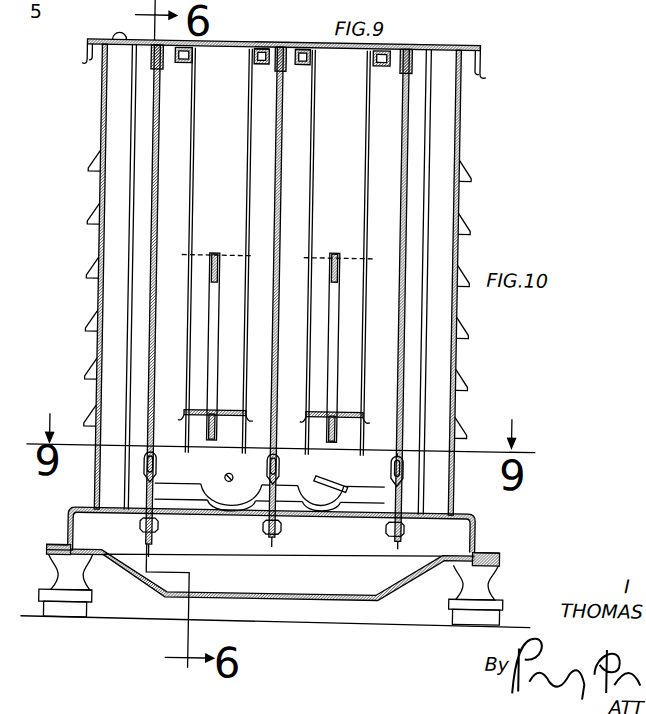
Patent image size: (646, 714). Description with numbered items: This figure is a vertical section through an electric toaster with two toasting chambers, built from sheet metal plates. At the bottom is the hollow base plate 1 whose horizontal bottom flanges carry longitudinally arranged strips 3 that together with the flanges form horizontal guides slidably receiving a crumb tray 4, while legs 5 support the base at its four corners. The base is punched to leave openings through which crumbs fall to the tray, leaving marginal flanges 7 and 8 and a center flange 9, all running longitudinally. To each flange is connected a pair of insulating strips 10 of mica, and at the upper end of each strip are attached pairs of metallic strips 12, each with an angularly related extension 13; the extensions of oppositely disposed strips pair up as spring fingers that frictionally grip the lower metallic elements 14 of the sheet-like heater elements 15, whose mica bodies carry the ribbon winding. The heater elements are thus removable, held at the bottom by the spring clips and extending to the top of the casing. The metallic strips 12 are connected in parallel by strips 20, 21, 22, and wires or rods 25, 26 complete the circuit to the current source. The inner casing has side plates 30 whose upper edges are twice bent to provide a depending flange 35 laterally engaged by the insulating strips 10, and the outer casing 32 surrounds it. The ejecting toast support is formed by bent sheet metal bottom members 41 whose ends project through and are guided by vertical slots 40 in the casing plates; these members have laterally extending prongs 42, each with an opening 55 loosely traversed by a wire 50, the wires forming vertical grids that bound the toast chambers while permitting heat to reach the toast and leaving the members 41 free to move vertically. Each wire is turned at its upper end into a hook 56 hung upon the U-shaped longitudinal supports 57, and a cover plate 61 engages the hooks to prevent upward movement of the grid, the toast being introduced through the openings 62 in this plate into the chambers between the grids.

The base plate 1 is at (460, 515).
The strips 3 is at (61, 558).
The crumb tray 4 is at (341, 602).
The legs 5 is at (67, 601).
The marginal flange 7 is at (145, 533).
The marginal flange 8 is at (283, 541).
The center flange 9 is at (411, 541).
The insulating strips 10 is at (163, 540).
The metallic strips 12 is at (149, 491).
The spring fingers 13 is at (146, 462).
The lower metallic elements 14 is at (404, 456).
The sheet-like heater elements 15 is at (154, 173).
The strip 20 is at (328, 505).
The strip 21 is at (356, 510).
The strip 22 is at (235, 515).
The bar 25 is at (334, 469).
The wire or rod 26 is at (238, 470).
The side plates 30 is at (127, 128).
The outer casing 32 is at (99, 289).
The depending flange 35 is at (150, 61).
The vertical slots 40 is at (213, 254).
The translatable bottom members 41 is at (212, 272).
The arms or prongs 42 is at (206, 419).
The wires 50 is at (244, 137).
The openings 55 is at (188, 410).
The hook 56 is at (296, 46).
The supports 57 is at (185, 66).
The cover plate 61 is at (91, 42).
The openings 62 is at (222, 44).